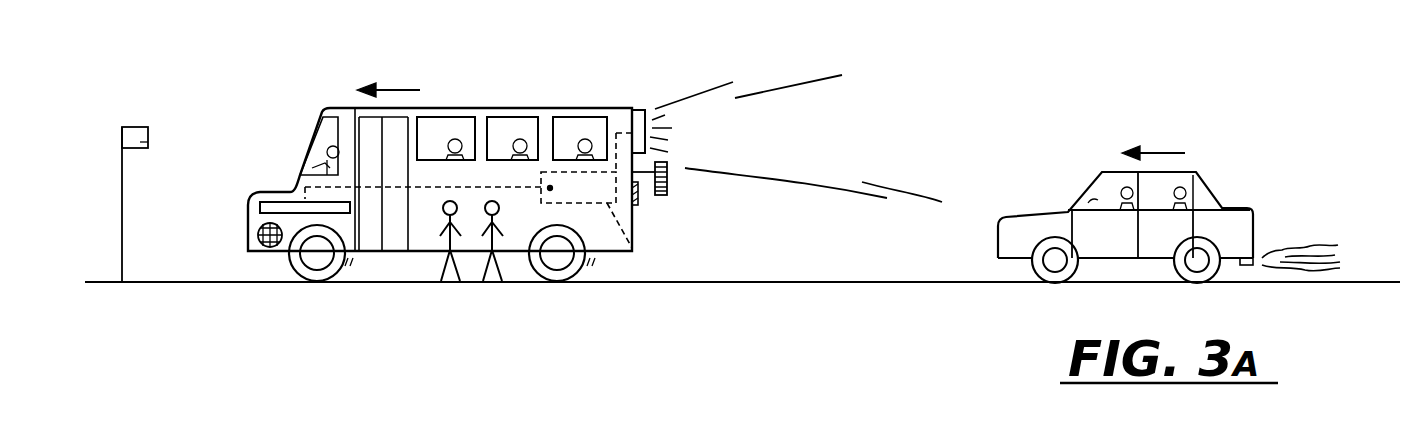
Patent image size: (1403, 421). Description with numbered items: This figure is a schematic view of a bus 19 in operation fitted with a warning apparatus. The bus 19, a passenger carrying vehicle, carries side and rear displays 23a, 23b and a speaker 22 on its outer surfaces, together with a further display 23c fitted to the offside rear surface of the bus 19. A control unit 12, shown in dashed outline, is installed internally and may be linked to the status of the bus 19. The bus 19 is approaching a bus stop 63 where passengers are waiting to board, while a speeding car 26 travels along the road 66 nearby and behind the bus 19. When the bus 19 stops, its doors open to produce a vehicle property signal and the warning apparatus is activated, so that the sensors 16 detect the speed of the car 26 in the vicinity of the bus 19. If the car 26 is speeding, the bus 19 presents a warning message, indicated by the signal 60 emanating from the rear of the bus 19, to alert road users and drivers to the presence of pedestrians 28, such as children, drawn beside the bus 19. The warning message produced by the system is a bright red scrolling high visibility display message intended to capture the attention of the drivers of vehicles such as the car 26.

The control unit 12 is at (632, 252).
The sensors 16 is at (640, 195).
The bus 19 is at (497, 108).
The speaker 22 is at (258, 233).
The side display 23a is at (278, 207).
The rear display 23b is at (638, 110).
The further display 23c is at (667, 183).
The car 26 is at (1218, 178).
The pedestrians 28 is at (442, 265).
The transmitted signal 60 is at (803, 64).
The bus stop 63 is at (148, 140).
The road 66 is at (822, 282).